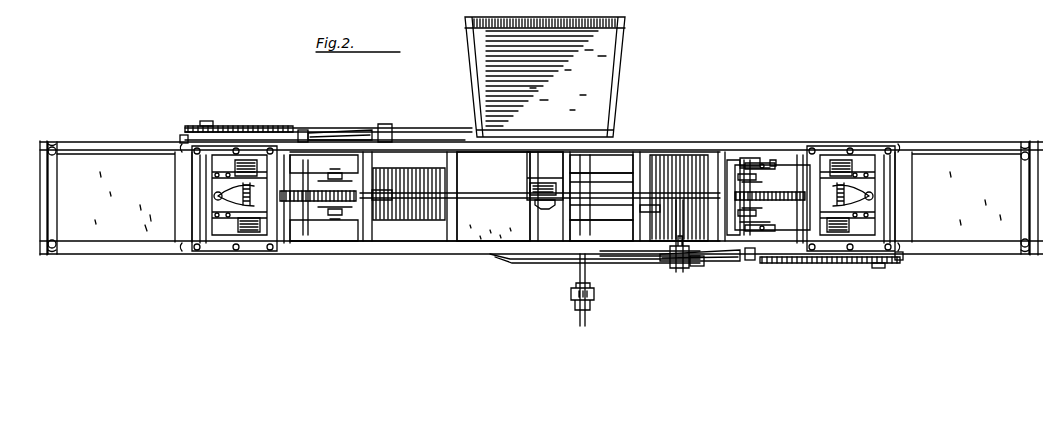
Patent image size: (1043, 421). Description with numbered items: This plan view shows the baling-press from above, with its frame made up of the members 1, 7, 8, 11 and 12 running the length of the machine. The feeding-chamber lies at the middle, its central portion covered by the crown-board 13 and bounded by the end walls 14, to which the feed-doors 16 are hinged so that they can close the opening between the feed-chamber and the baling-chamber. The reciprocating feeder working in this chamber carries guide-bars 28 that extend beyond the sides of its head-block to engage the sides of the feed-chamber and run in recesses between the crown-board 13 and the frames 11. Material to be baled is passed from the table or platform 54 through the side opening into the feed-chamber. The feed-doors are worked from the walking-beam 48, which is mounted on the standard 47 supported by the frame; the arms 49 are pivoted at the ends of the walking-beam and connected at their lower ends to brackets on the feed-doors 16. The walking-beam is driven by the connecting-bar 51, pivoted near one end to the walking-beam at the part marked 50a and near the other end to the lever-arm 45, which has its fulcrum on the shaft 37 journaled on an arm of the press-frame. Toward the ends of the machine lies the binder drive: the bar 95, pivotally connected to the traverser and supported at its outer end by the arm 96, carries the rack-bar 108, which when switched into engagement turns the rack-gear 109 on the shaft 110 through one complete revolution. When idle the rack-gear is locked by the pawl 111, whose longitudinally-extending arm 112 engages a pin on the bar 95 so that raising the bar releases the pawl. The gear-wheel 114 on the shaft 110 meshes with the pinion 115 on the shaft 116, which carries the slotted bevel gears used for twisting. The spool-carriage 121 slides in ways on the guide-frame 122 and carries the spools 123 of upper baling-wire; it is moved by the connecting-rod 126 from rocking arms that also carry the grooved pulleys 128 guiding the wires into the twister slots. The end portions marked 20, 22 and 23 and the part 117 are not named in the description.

The frame 1 is at (101, 141).
The frame 7 is at (149, 147).
The frame 8 is at (545, 199).
The frame 11 is at (371, 246).
The frame 12 is at (365, 160).
The crown-board 13 is at (493, 196).
The end walls 14 is at (396, 178).
The feed-doors 16 is at (542, 198).
The end box 20 is at (539, 197).
The end plate 22 is at (57, 210).
The roller 23 is at (56, 160).
The guide-bars 28 is at (461, 196).
The shaft 37 is at (587, 278).
The lever-arm 45 is at (535, 260).
The standard 47 is at (543, 192).
The walking-beam 48 is at (601, 195).
The arms 49 is at (391, 219).
The collar 50a is at (640, 207).
The connecting-bar 51 is at (670, 259).
The table or platform 54 is at (542, 72).
The bar 95 is at (185, 128).
The arm 96 is at (883, 273).
The rack-bar 108 is at (250, 121).
The rack-gear 109 is at (298, 130).
The shaft 110 is at (770, 170).
The pawl 111 is at (329, 132).
The longitudinally-extending arm 112 is at (180, 139).
The gear-wheel 114 is at (774, 188).
The pinion 115 is at (696, 266).
The shaft 116 is at (760, 198).
The bearing plate 117 is at (763, 162).
The spool-carriage 121 is at (546, 195).
The guide-frame 122 is at (195, 156).
The spools 123 is at (235, 175).
The connecting-rod 126 is at (794, 153).
The grooved pulleys 128 is at (740, 159).